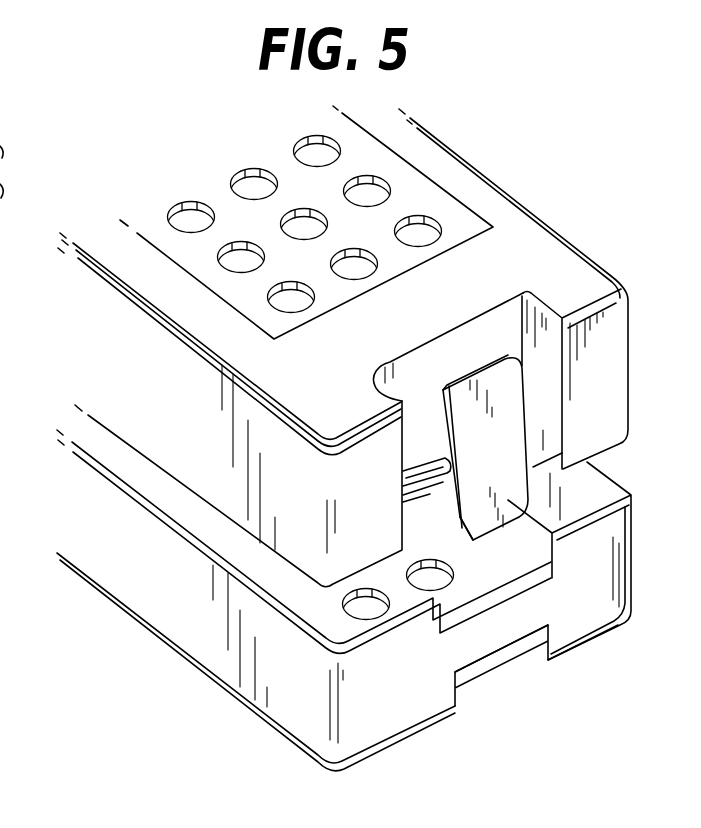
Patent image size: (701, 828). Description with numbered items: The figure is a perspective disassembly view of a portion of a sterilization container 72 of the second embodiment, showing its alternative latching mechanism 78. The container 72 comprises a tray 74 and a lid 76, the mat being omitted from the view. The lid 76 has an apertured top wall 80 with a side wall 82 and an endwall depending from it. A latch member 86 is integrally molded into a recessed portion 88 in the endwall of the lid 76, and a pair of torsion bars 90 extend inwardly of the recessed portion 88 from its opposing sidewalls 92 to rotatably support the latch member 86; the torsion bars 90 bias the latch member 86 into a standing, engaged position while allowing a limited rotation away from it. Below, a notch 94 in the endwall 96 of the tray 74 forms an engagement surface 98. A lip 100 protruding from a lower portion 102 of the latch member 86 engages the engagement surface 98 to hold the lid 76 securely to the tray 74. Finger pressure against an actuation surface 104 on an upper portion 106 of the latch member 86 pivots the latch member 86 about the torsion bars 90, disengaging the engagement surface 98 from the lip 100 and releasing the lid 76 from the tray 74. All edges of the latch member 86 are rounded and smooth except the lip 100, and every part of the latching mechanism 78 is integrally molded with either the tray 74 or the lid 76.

The container 72 is at (355, 611).
The tray 74 is at (337, 611).
The lid 76 is at (363, 346).
The latching mechanism 78 is at (592, 495).
The apertured top wall 80 is at (512, 223).
The side wall 82 is at (150, 423).
The latch member 86 is at (506, 482).
The recessed portion 88 is at (466, 358).
The torsion bars 90 is at (422, 477).
The sidewalls 92 is at (537, 327).
The notch 94 is at (537, 650).
The endwall 96 is at (377, 730).
The engagement surface 98 is at (472, 662).
The lip 100 is at (448, 514).
The lower portion 102 is at (490, 537).
The actuation surface 104 is at (503, 400).
The upper portion 106 is at (390, 365).